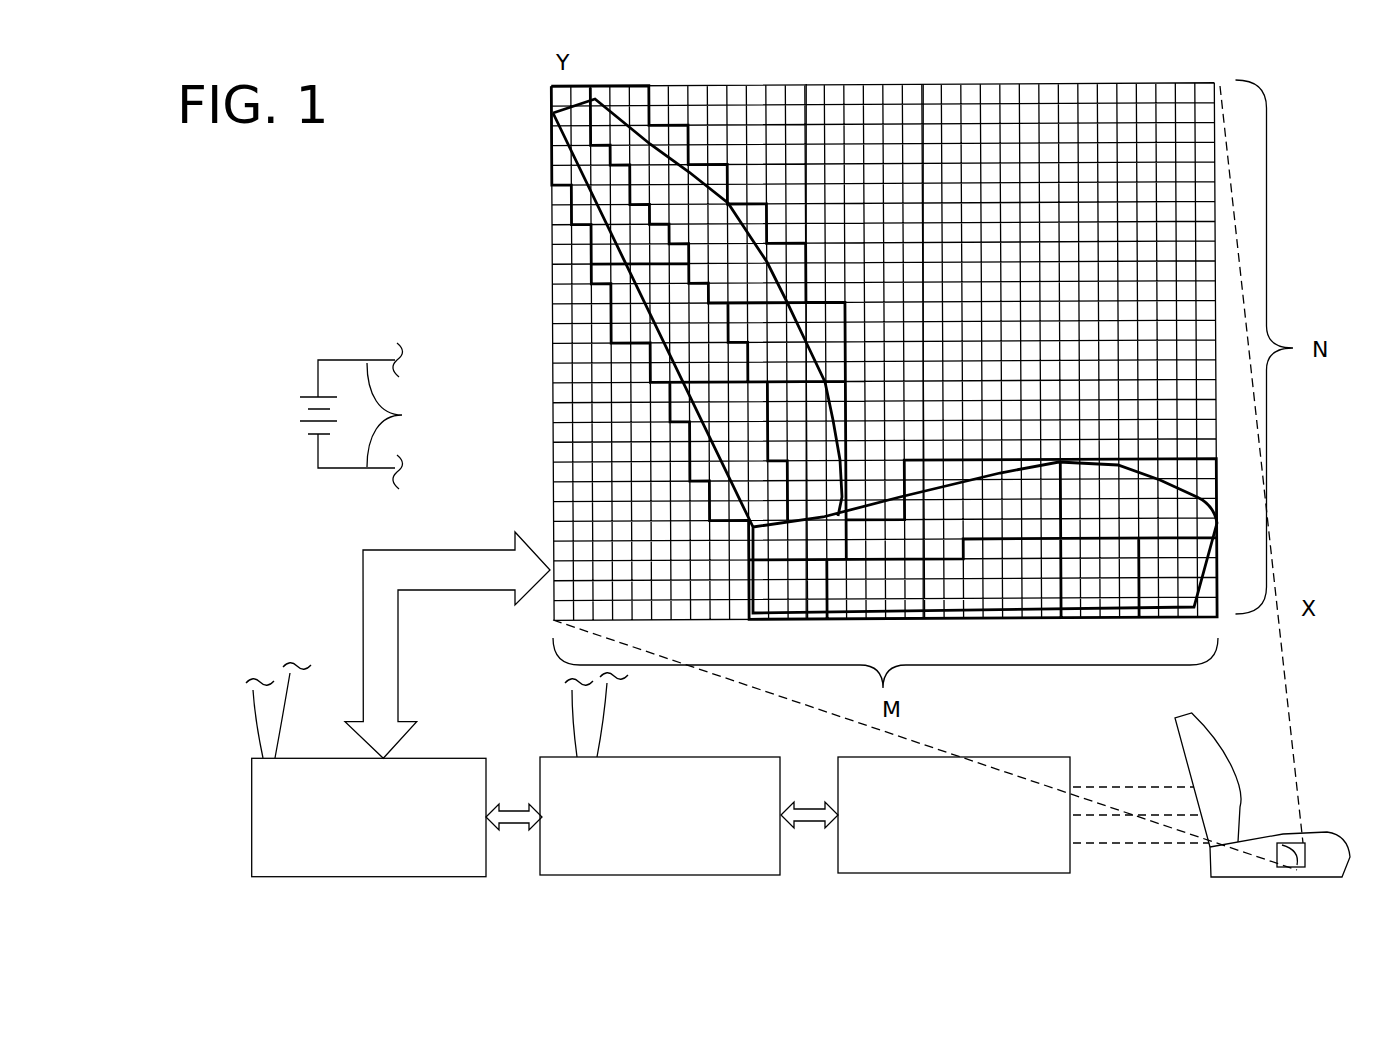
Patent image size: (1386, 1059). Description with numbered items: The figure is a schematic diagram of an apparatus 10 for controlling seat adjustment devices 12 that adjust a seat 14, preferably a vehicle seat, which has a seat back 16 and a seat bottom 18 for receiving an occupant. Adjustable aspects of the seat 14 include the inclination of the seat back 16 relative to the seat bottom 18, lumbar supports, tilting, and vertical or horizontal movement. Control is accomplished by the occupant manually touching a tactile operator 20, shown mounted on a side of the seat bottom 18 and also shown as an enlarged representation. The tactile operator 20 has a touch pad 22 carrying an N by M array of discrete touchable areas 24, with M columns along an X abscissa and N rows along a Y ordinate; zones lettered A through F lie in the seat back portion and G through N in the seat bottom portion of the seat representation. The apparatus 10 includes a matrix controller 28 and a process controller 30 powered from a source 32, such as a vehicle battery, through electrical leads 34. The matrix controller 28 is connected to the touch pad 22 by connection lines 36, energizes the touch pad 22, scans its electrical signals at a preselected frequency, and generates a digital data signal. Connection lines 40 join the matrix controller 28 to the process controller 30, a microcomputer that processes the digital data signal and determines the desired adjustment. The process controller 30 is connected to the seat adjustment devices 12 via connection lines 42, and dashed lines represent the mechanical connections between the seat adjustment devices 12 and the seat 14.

The apparatus 10 is at (430, 226).
The seat adjustment devices 12 is at (1037, 768).
The seat 14 is at (1264, 783).
The seat back 16 is at (1192, 722).
The seat bottom 18 is at (1327, 840).
The tactile operator 20 is at (1238, 218).
The touch pad 22 is at (1078, 108).
The touchable areas 24 is at (915, 130).
The matrix controller 28 is at (448, 770).
The process controller 30 is at (702, 768).
The source 32 is at (312, 397).
The electrical leads 34 is at (402, 415).
The connection lines 36 is at (452, 567).
The connection lines 40 is at (512, 817).
The connection lines 42 is at (807, 813).